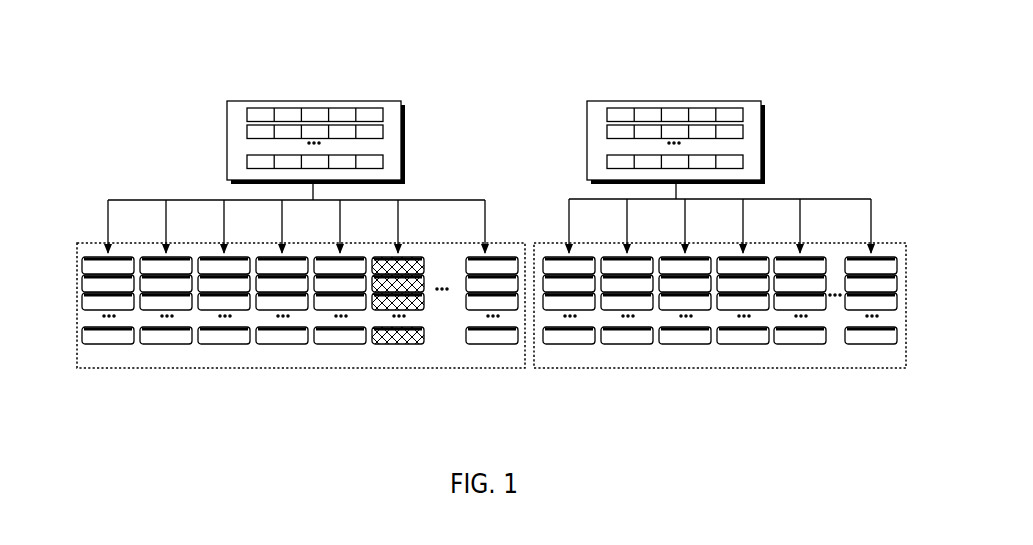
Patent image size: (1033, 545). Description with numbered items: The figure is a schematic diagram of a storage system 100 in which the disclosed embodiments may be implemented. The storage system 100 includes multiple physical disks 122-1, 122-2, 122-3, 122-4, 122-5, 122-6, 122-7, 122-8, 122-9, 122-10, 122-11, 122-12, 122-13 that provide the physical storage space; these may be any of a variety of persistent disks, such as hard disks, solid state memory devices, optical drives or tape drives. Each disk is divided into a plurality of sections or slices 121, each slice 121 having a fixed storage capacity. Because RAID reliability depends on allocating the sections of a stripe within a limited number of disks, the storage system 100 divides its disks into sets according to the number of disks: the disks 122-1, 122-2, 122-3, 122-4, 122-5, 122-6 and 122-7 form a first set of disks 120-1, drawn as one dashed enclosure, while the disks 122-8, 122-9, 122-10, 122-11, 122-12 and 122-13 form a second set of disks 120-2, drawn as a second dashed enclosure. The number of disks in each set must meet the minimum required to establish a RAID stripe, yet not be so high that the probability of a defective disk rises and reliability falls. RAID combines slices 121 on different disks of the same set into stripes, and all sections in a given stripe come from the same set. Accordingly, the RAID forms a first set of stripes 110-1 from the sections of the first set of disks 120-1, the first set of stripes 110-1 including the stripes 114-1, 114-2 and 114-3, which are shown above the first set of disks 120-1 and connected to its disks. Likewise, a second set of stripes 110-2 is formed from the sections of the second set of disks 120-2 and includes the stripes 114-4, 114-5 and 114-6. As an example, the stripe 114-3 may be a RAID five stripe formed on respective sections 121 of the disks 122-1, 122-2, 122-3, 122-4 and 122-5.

The storage system 100 is at (181, 31).
The first set of stripes 110-1 is at (337, 132).
The second set of stripes 110-2 is at (702, 132).
The stripe 114-1 is at (384, 115).
The stripe 114-2 is at (384, 135).
The stripe 114-3 is at (384, 163).
The stripe 114-4 is at (744, 117).
The stripe 114-5 is at (744, 136).
The stripe 114-6 is at (744, 164).
The first set of disks 120-1 is at (92, 243).
The second set of disks 120-2 is at (893, 243).
The slice 121 is at (83, 263).
The physical disk 122-1 is at (82, 320).
The physical disk 122-2 is at (152, 353).
The physical disk 122-3 is at (216, 353).
The physical disk 122-4 is at (279, 353).
The physical disk 122-5 is at (337, 354).
The physical disk 122-6 is at (389, 354).
The physical disk 122-7 is at (482, 353).
The physical disk 122-8 is at (566, 353).
The physical disk 122-9 is at (624, 354).
The physical disk 122-10 is at (681, 354).
The physical disk 122-11 is at (737, 354).
The physical disk 122-12 is at (797, 354).
The physical disk 122-13 is at (861, 354).